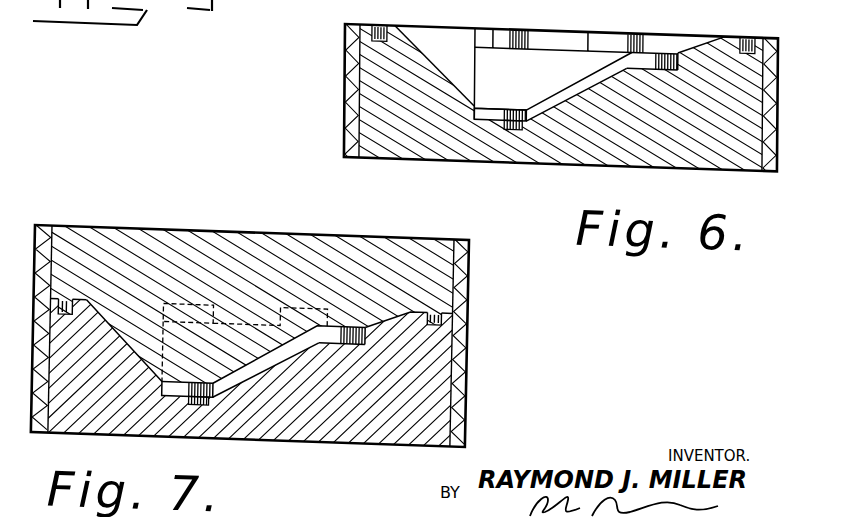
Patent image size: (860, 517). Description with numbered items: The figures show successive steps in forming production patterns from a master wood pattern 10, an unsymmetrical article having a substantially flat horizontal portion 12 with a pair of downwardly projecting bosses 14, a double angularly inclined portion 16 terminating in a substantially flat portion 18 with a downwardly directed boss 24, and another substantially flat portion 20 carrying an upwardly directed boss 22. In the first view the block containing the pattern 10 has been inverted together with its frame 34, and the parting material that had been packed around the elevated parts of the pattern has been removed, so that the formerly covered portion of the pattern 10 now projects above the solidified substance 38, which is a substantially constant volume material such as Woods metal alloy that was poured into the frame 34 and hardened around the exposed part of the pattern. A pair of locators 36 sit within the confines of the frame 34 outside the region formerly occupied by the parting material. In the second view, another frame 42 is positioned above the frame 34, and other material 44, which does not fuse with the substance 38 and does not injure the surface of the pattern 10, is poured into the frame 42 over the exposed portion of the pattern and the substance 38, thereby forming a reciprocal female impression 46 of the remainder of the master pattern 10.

In FIG. 6, the master wood pattern 10 is at (562, 209).
In FIG. 7, the master wood pattern 10 is at (337, 346).
In FIG. 6, the substantially flat horizontal portion 12 is at (576, 28).
In FIG. 6, the downwardly projecting bosses 14 is at (565, 26).
In FIG. 7, the downwardly projecting bosses 14 is at (245, 299).
In FIG. 6, the double angularly inclined portion 16 is at (514, 61).
In FIG. 6, the substantially flat portion 18 is at (691, 36).
In FIG. 7, the substantially flat portion 18 is at (344, 397).
In FIG. 6, the substantially flat portion 20 is at (487, 150).
In FIG. 7, the substantially flat portion 20 is at (181, 423).
In FIG. 6, the upwardly directed boss 22 is at (509, 150).
In FIG. 7, the upwardly directed boss 22 is at (201, 423).
In FIG. 6, the downwardly directed boss 24 is at (602, 57).
In FIG. 7, the downwardly directed boss 24 is at (290, 299).
In FIG. 6, the frame 34 is at (421, 127).
In FIG. 7, the frame 34 is at (273, 337).
In FIG. 7, the locators 36 is at (254, 320).
In FIG. 6, the substance 38 is at (431, 53).
In FIG. 7, the frame 42 is at (42, 313).
In FIG. 7, the other material 44 is at (74, 20).
In FIG. 7, the reciprocal female impression 46 is at (409, 272).